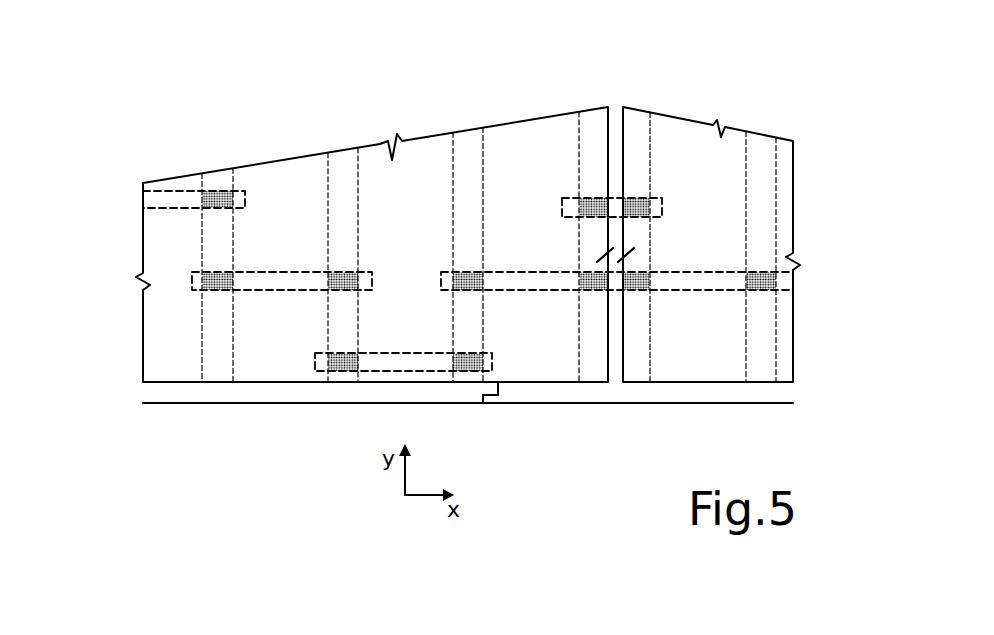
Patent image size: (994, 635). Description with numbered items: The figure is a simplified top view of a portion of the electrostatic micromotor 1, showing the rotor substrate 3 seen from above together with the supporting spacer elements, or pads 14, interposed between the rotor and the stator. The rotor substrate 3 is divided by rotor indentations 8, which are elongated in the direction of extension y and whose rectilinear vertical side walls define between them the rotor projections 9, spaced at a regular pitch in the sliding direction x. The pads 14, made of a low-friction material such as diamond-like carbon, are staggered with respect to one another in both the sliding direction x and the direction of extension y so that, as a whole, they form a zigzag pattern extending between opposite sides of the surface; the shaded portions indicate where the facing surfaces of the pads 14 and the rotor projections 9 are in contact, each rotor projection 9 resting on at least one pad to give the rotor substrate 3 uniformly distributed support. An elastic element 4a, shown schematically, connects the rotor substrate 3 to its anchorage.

The electrostatic micromotor 1 is at (176, 122).
The rotor substrate 3 is at (148, 243).
The rotor indentations 8 is at (281, 218).
The rotor projections 9 is at (597, 117).
The supporting spacer elements 14 is at (276, 291).
The elastic elements 4a is at (490, 404).